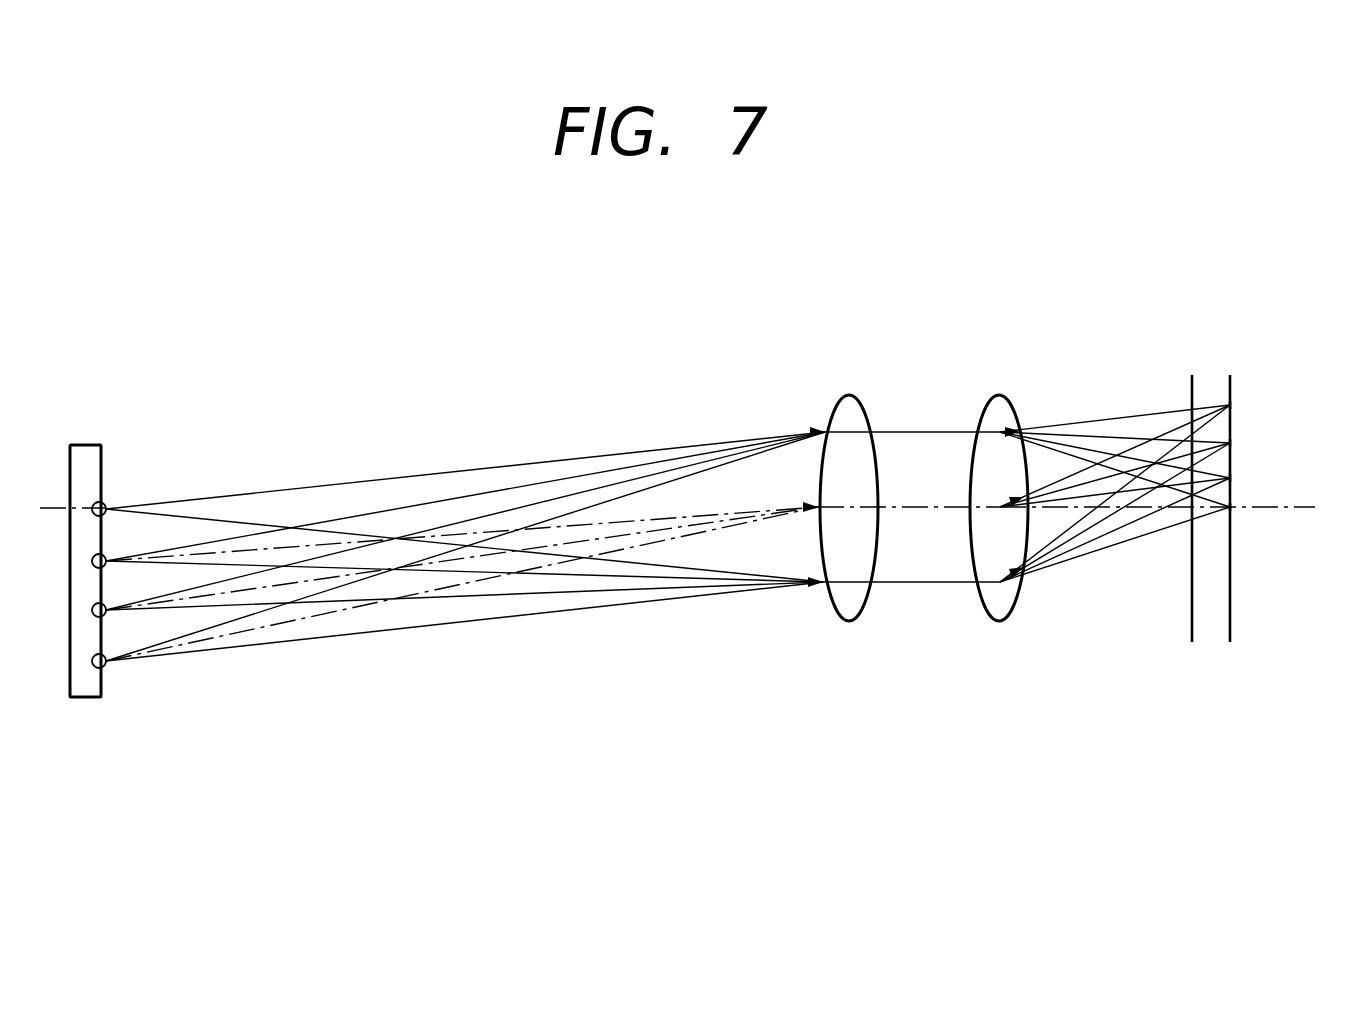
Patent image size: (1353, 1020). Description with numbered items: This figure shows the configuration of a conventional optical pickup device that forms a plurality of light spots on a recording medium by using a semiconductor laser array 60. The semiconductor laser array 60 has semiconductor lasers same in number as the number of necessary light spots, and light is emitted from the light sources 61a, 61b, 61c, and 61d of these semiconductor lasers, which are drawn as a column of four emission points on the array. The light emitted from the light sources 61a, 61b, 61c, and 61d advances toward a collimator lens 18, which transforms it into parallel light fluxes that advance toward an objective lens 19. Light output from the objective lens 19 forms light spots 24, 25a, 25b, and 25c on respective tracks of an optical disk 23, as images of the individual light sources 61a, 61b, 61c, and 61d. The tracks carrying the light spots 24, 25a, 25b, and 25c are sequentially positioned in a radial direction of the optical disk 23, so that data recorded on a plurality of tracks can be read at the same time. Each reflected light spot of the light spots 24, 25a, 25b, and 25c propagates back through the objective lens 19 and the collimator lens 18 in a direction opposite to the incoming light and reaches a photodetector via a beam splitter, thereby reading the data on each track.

The semiconductor laser array 60 is at (89, 437).
The light source 61a is at (104, 497).
The light source 61b is at (107, 553).
The light source 61c is at (106, 616).
The light source 61d is at (106, 668).
The collimator lens 18 is at (864, 404).
The objective lens 19 is at (999, 397).
The optical disk 23 is at (1213, 378).
The light spot 24 is at (1237, 515).
The light spot 25a is at (1236, 478).
The light spot 25b is at (1231, 443).
The light spot 25c is at (1231, 405).